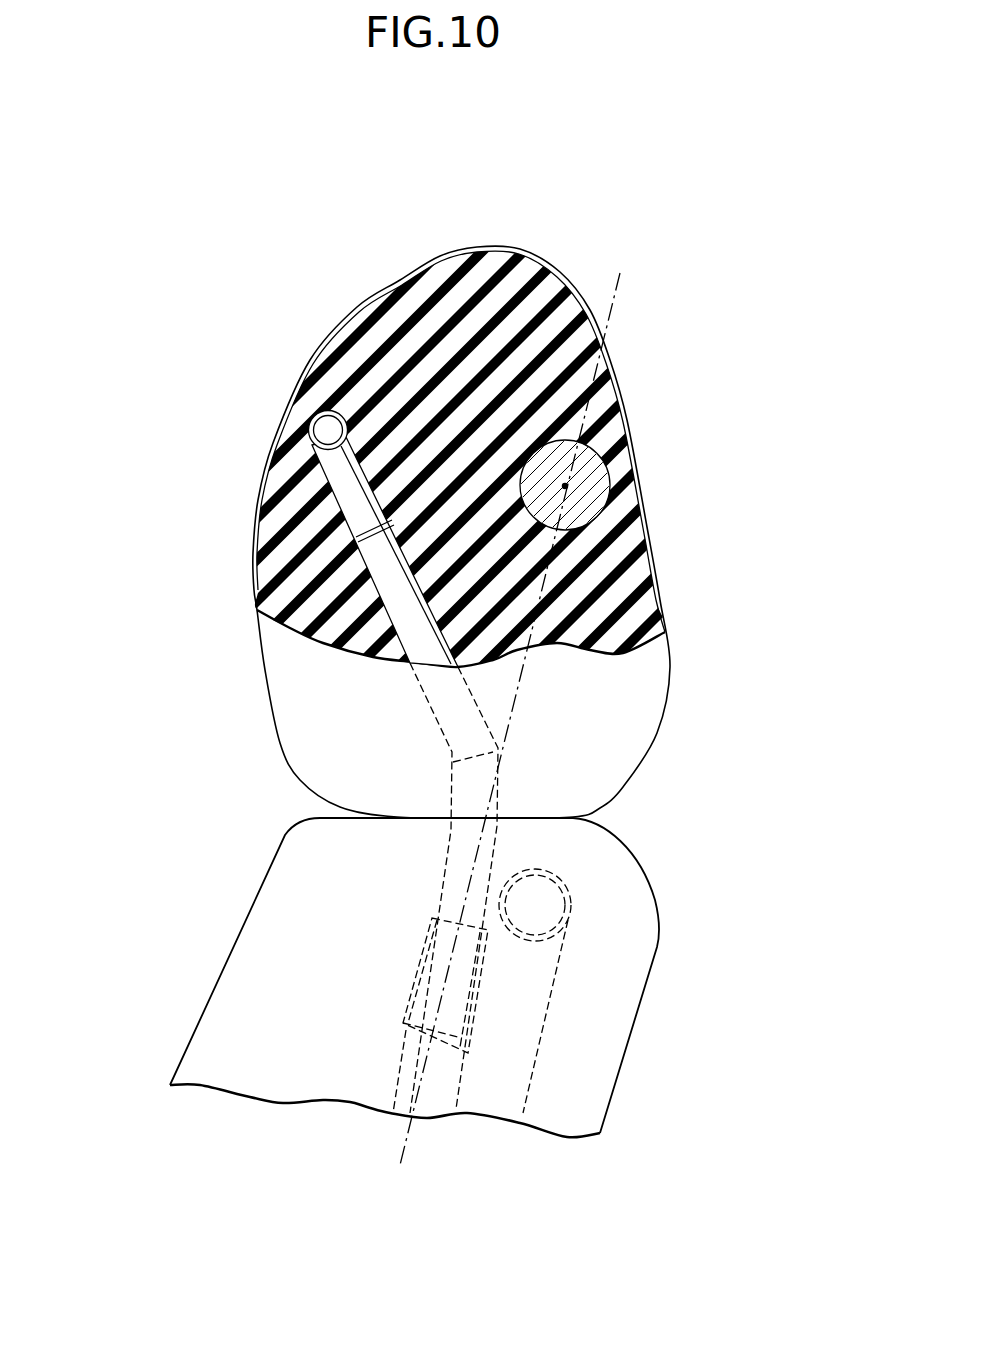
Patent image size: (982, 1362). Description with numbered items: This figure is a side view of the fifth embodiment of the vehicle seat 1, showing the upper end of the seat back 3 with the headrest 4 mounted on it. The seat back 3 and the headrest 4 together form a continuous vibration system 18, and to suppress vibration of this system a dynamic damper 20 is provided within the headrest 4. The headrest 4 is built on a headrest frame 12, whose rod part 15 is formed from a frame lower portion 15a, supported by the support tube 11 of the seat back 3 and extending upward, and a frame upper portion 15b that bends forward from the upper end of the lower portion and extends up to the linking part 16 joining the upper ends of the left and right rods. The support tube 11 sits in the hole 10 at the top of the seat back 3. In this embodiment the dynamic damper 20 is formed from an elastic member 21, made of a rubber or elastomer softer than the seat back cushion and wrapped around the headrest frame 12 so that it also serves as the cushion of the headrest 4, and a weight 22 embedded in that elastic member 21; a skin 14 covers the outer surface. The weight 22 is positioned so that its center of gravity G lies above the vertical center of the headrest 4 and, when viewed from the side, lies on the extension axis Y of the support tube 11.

The seat assembly 1 is at (722, 828).
The seat back 3 is at (222, 1008).
The headrest 4 is at (284, 675).
The hole 10 is at (535, 1050).
The support tube 11 is at (413, 993).
The headrest frame 12 is at (313, 575).
The skin 14 is at (478, 249).
The rod part 15 is at (222, 752).
The frame lower portion 15a is at (447, 900).
The frame upper portion 15b is at (407, 637).
The linking part 16 is at (333, 400).
The vibration system 18 is at (135, 722).
The dynamic damper 20 is at (728, 318).
The elastic member 21 is at (555, 355).
The weight 22 is at (580, 470).
The center of gravity G is at (567, 488).
The extension axis Y is at (620, 273).